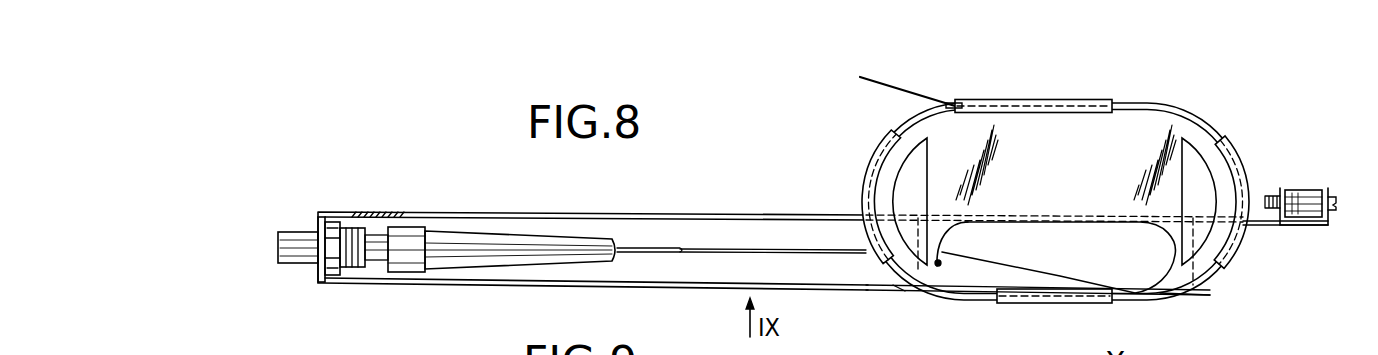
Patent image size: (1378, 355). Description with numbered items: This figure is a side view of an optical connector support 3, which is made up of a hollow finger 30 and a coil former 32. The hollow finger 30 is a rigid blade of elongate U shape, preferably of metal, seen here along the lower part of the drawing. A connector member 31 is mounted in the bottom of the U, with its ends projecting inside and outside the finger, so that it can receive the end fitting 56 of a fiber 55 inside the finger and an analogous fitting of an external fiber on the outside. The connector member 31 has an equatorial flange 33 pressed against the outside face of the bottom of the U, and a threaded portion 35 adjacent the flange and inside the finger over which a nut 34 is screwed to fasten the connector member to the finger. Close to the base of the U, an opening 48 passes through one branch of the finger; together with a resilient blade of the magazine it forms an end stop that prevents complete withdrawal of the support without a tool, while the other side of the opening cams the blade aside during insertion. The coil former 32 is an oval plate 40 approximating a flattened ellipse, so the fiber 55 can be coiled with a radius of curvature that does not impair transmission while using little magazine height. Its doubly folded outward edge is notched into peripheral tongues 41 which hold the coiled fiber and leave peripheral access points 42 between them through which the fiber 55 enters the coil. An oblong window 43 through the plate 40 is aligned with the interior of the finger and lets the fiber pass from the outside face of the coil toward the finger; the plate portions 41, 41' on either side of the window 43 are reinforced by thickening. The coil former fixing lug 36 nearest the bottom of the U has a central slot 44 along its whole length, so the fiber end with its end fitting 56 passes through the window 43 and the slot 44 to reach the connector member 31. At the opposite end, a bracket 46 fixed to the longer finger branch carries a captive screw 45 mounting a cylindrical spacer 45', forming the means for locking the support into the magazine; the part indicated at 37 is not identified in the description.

The optical connector support 3 is at (795, 211).
The hollow finger 30 is at (525, 288).
The connector member 31 is at (302, 236).
The coil former 32 is at (1224, 271).
The equatorial flange 33 is at (320, 270).
The nut 34 is at (340, 230).
The threaded portion 35 is at (350, 262).
The coil former fixing lug 36 is at (955, 266).
The lower frame portion 37 is at (1180, 294).
The oval plate 40 is at (1158, 118).
The peripheral tongues 41 is at (1058, 196).
The reinforced plate portion 41' is at (1054, 195).
The peripheral access points 42 is at (952, 104).
The oblong window 43 is at (1063, 250).
The central slot 44 is at (898, 289).
The captive screw 45 is at (1294, 239).
The cylindrical spacer 45' is at (1287, 241).
The bracket 46 is at (1302, 190).
The opening 48 is at (372, 212).
The fiber 55 is at (742, 250).
The end fitting 56 is at (535, 246).